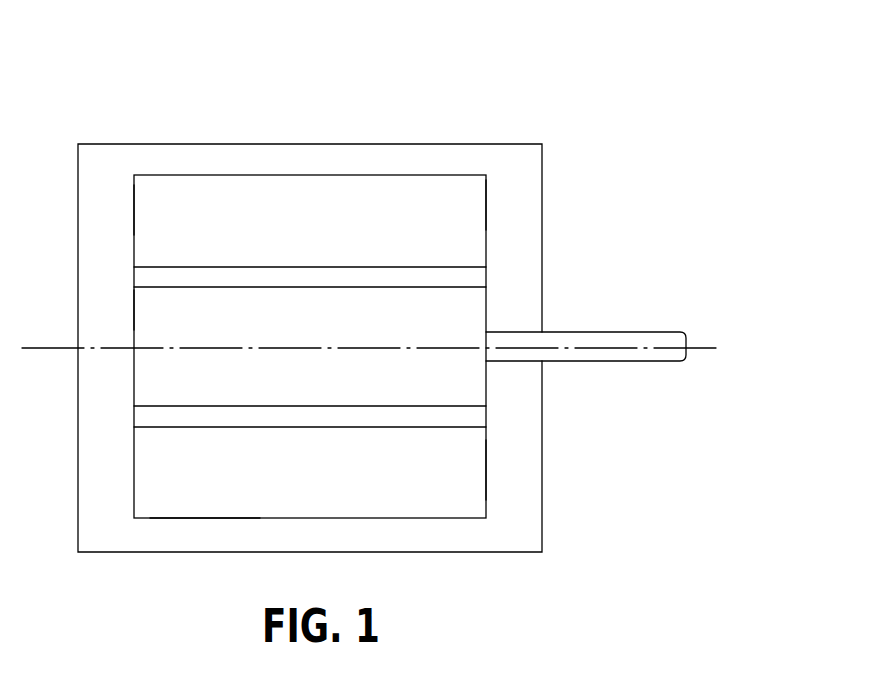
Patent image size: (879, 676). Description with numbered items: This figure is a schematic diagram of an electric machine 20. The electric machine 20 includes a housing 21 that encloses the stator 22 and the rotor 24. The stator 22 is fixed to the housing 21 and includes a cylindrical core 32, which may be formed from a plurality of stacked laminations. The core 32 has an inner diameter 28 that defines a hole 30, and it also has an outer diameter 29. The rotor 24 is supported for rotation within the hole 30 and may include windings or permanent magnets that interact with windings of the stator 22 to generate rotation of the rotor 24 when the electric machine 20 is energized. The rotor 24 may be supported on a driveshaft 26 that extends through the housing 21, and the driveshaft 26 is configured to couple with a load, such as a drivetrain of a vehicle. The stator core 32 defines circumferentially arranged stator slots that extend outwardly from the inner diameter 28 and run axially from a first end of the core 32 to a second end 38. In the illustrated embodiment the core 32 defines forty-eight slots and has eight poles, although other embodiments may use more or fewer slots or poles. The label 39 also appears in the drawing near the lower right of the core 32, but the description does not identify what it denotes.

The electric machine 20 is at (505, 63).
The housing 21 is at (312, 144).
The stator 22 is at (198, 175).
The rotor 24 is at (134, 320).
The driveshaft 26 is at (595, 332).
The inner diameter 28 is at (462, 268).
The outer diameter 29 is at (203, 520).
The hole 30 is at (516, 413).
The cylindrical core 32 is at (486, 224).
The second end 38 is at (134, 228).
The right lower wall portion 39 is at (488, 470).